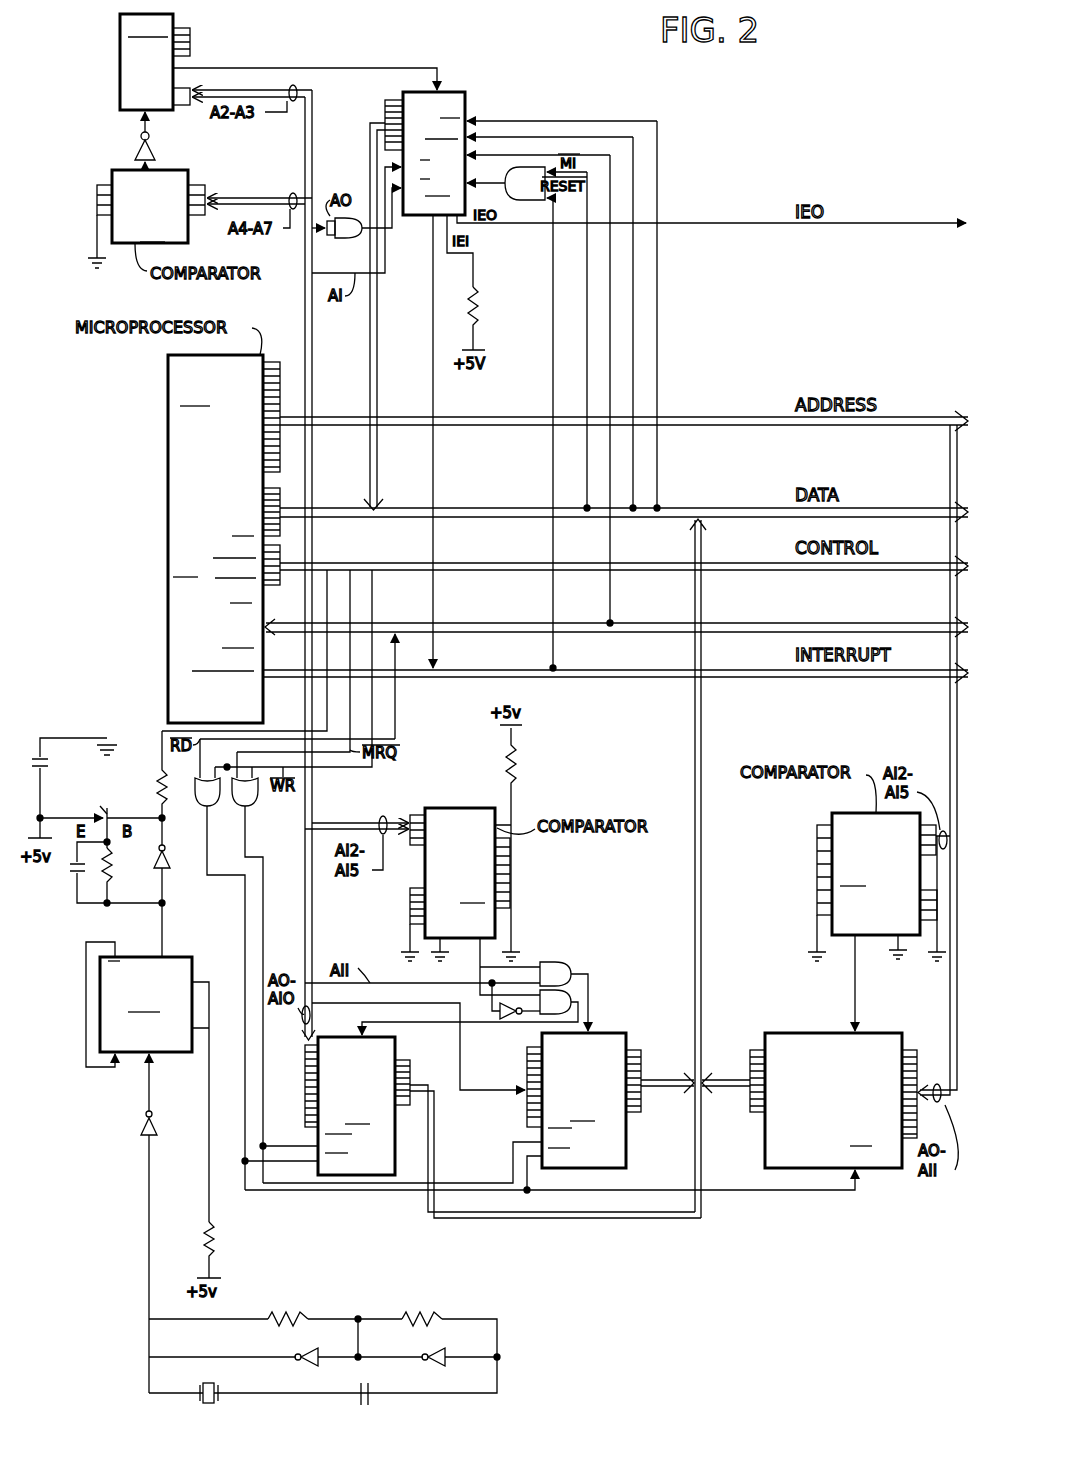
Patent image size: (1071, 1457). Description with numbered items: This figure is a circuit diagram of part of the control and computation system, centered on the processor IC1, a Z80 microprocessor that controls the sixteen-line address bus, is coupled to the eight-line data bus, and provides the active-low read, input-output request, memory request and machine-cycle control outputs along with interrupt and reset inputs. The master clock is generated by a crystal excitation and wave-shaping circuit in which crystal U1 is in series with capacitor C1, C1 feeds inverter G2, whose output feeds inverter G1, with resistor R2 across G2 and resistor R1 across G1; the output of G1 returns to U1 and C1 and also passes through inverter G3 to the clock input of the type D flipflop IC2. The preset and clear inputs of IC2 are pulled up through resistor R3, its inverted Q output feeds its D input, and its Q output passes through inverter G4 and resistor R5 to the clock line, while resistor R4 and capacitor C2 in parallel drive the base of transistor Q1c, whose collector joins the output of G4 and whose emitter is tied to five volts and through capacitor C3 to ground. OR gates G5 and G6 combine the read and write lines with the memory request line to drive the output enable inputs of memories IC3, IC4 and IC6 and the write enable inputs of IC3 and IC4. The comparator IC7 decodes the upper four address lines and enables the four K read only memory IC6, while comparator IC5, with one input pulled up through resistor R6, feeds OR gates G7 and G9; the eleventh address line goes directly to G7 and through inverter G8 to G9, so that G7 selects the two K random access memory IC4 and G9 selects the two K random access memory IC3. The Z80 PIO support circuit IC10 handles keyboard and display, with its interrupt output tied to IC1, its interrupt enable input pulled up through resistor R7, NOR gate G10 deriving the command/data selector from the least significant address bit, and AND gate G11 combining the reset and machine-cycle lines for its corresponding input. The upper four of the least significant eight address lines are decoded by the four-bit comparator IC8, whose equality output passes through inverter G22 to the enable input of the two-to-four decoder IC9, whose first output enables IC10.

The processor IC1 is at (224, 539).
The type D flipflop IC2 is at (147, 1082).
The random access memory circuit IC3 is at (357, 1106).
The random access memory circuit IC4 is at (584, 1100).
The 8-bit comparator IC5 is at (455, 884).
The read only memory IC6 is at (833, 1100).
The 8-bit comparator IC7 is at (879, 887).
The 4-bit comparator IC8 is at (146, 219).
The 2-to-4 decoder IC9 is at (278, 62).
The Z80 PIO support circuit IC10 is at (455, 92).
The inverter G1 is at (305, 1350).
The inverter G2 is at (430, 1350).
The inverter G3 is at (141, 1127).
The inverter G4 is at (170, 858).
The OR gate G5 is at (195, 788).
The OR gate G6 is at (257, 790).
The OR gate G7 is at (540, 962).
The inverter G8 is at (510, 1020).
The OR gate G9 is at (572, 1008).
The NOR gate G10 is at (358, 243).
The AND gate G11 is at (527, 183).
The inverter G22 is at (150, 143).
The resistor R1 is at (303, 1312).
The resistor R2 is at (425, 1312).
The pull-up resistor R3 is at (213, 1243).
The resistor R4 is at (113, 872).
The resistor R5 is at (158, 786).
The pull-up resistor R6 is at (515, 776).
The pull-up resistor R7 is at (478, 308).
The capacitor C1 is at (360, 1383).
The capacitor C2 is at (70, 870).
The capacitor C3 is at (50, 765).
The transistor Q1c is at (99, 793).
The crystal U1 is at (200, 1383).